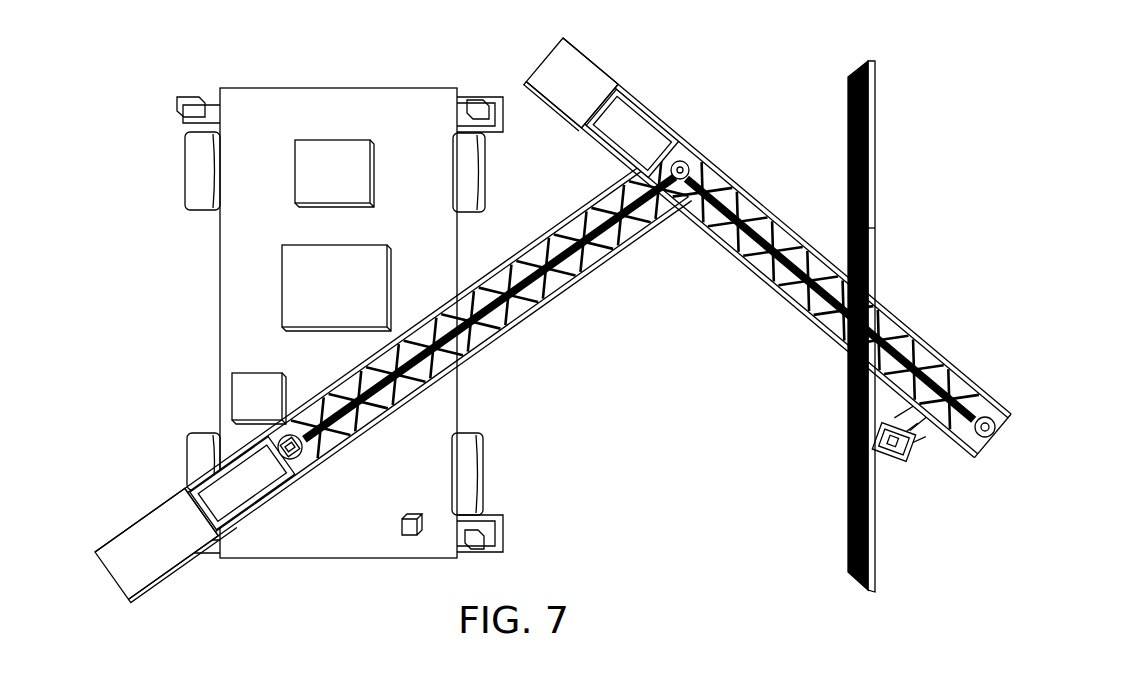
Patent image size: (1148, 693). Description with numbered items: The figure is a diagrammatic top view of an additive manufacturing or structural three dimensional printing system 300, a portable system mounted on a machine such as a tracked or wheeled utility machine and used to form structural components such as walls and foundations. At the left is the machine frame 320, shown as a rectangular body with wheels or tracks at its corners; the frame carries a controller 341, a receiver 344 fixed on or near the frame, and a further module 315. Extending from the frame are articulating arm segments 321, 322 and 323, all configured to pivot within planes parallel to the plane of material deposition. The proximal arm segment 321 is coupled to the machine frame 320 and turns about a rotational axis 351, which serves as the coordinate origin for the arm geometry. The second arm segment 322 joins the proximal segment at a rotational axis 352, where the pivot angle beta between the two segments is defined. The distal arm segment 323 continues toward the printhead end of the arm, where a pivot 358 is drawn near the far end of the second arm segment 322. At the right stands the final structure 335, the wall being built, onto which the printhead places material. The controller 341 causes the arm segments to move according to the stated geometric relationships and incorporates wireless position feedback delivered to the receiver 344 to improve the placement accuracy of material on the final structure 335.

The printing system 300 is at (707, 85).
The controller 315 is at (348, 184).
The machine frame 320 is at (330, 542).
The proximal arm segment 321 is at (548, 312).
The second arm segment 322 is at (880, 308).
The distal arm segment 323 is at (353, 304).
The final structure 335 is at (892, 155).
The controller 341 is at (250, 392).
The receiver 344 is at (409, 536).
The rotational axis 351 is at (299, 458).
The rotational axis 352 is at (690, 162).
The end effector joint 358 is at (986, 440).